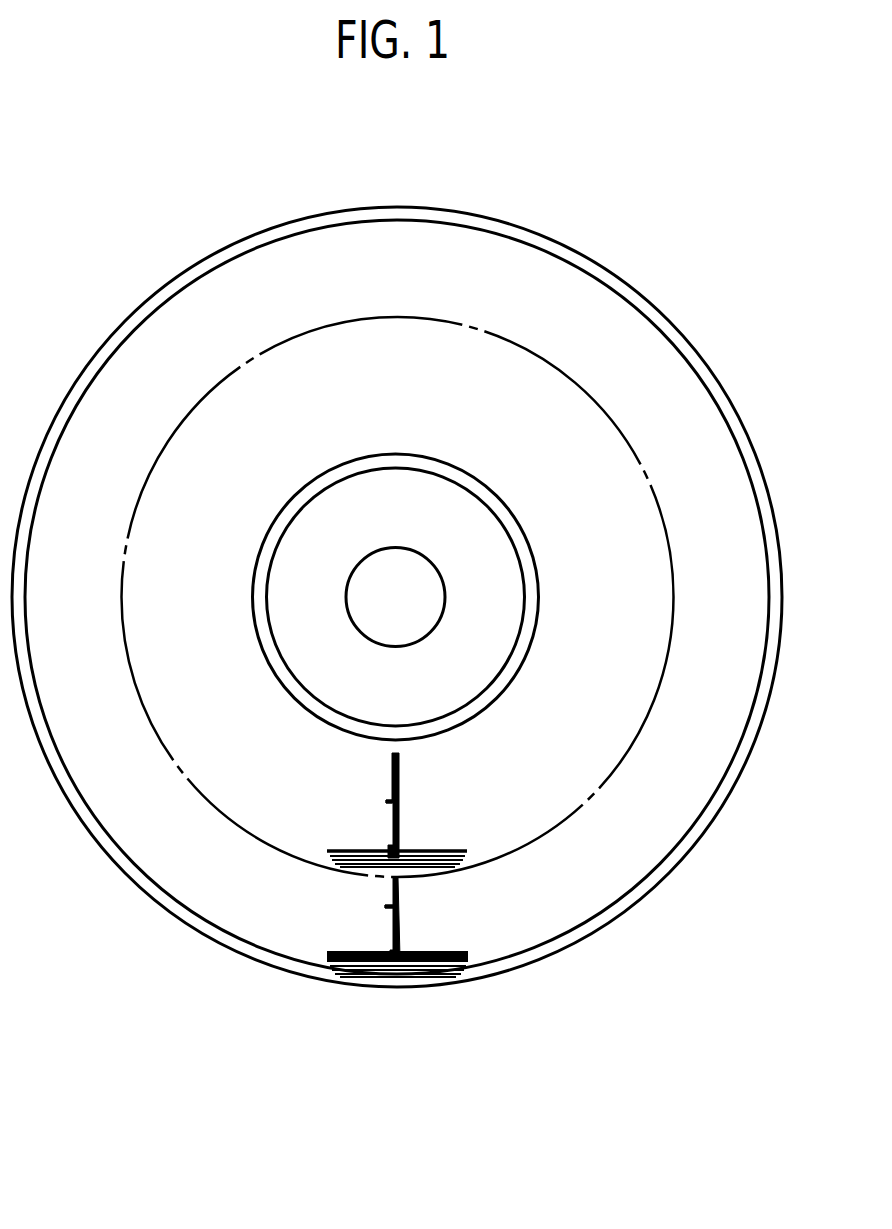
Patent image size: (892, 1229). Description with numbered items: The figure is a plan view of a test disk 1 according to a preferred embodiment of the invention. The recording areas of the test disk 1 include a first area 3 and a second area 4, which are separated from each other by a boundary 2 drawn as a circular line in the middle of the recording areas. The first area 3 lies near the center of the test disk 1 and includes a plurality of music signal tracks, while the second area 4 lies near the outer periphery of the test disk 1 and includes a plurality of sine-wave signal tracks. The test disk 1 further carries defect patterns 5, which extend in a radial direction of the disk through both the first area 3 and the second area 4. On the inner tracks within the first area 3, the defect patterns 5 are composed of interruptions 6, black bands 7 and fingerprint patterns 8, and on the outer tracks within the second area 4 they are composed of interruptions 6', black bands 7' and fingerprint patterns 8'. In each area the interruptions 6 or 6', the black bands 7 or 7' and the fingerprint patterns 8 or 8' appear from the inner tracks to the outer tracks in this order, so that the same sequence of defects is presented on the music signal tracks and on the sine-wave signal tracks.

The test disk 1 is at (331, 145).
The boundary 2 is at (640, 461).
The first area 3 is at (593, 600).
The second area 4 is at (717, 684).
The defect patterns 5 is at (462, 810).
The interruptions 6 is at (355, 767).
The black bands 7 is at (357, 805).
The fingerprint patterns 8 is at (365, 829).
The interruptions 6' is at (333, 885).
The black bands 7' is at (341, 918).
The fingerprint patterns 8' is at (363, 988).